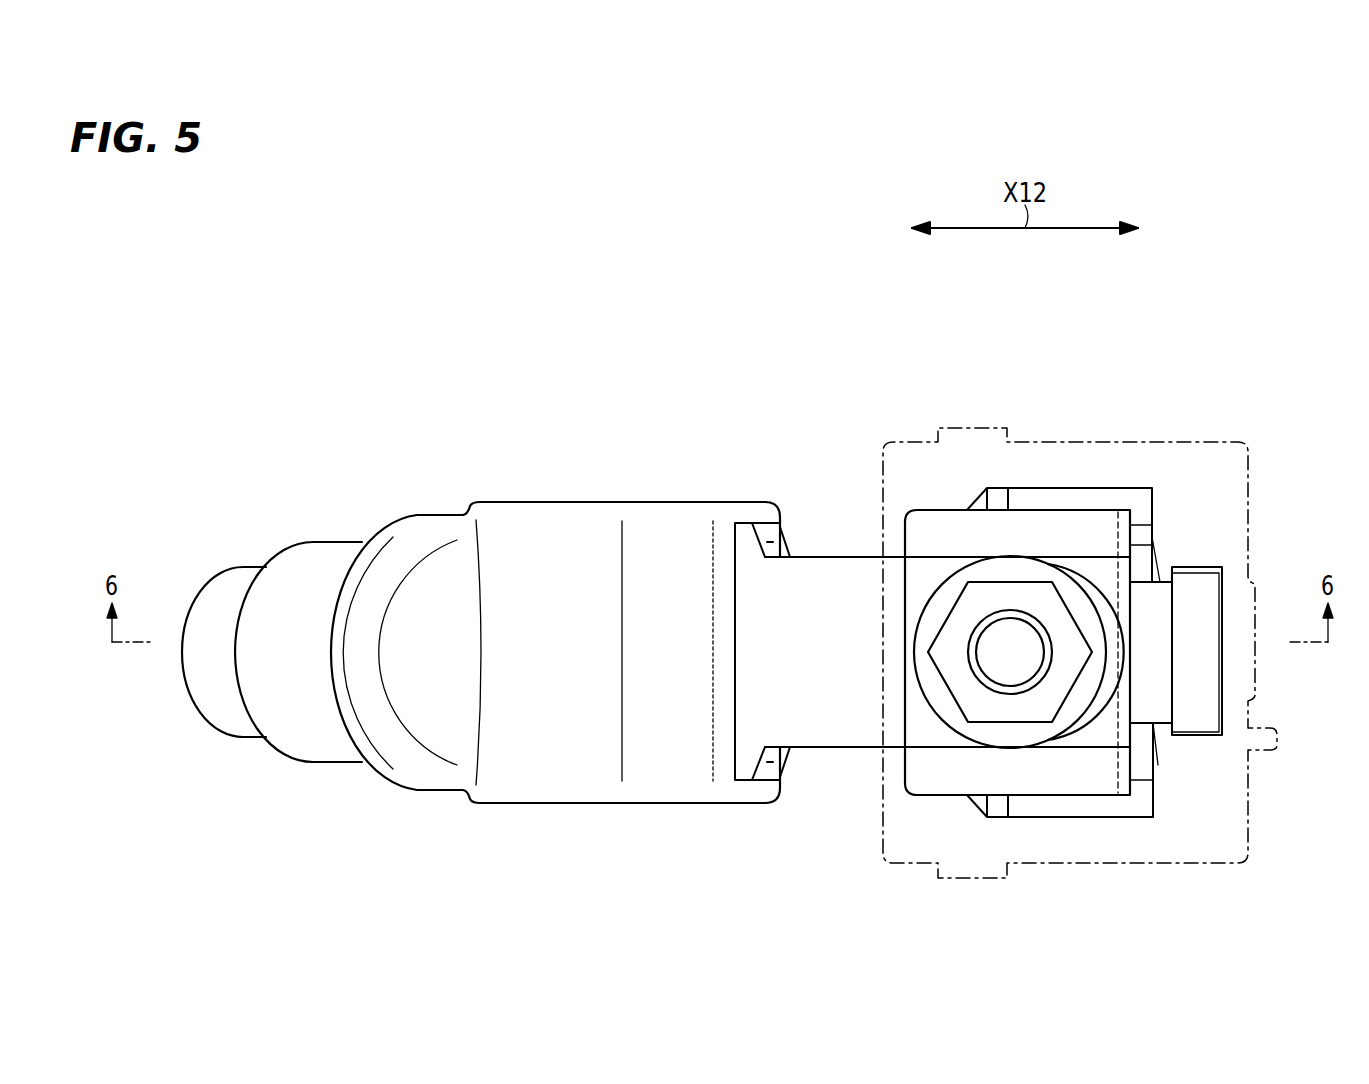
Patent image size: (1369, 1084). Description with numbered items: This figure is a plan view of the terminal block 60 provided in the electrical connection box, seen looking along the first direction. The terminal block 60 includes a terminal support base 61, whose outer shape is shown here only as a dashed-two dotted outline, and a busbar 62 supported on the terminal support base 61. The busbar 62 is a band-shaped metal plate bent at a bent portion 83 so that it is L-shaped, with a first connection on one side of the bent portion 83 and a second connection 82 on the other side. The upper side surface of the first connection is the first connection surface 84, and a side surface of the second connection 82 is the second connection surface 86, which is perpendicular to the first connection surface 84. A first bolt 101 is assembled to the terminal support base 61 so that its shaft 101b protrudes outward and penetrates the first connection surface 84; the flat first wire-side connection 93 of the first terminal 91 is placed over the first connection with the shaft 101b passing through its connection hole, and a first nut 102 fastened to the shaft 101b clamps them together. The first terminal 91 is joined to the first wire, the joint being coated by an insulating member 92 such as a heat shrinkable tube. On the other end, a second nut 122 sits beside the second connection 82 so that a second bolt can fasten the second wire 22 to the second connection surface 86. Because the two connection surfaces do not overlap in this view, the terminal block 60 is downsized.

The second wire 22 is at (240, 724).
The insulating member 92 is at (563, 790).
The first terminal 91 is at (811, 555).
The first wire-side connection 93 is at (1123, 632).
The terminal block 60 is at (1107, 623).
The terminal support base 61 is at (1253, 843).
The busbar 62 is at (907, 797).
The second connection 82 is at (1133, 546).
The bent portion 83 is at (944, 508).
The first connection surface 84 is at (1065, 528).
The second connection surface 86 is at (1118, 758).
The first bolt 101 is at (977, 682).
The shaft 101b is at (1000, 652).
The first nut 102 is at (947, 617).
The second nut 122 is at (1210, 682).